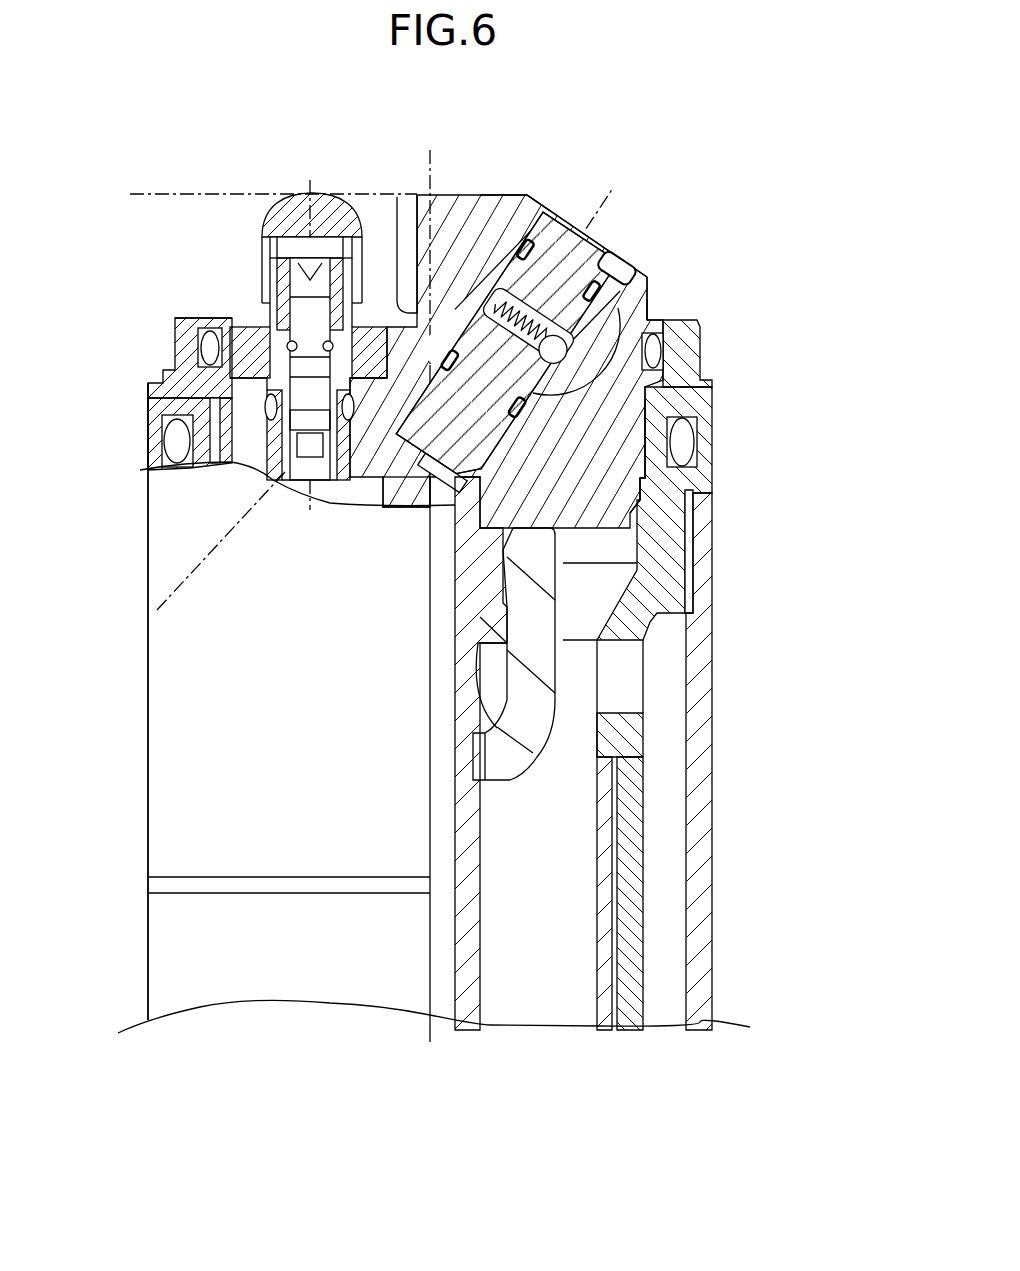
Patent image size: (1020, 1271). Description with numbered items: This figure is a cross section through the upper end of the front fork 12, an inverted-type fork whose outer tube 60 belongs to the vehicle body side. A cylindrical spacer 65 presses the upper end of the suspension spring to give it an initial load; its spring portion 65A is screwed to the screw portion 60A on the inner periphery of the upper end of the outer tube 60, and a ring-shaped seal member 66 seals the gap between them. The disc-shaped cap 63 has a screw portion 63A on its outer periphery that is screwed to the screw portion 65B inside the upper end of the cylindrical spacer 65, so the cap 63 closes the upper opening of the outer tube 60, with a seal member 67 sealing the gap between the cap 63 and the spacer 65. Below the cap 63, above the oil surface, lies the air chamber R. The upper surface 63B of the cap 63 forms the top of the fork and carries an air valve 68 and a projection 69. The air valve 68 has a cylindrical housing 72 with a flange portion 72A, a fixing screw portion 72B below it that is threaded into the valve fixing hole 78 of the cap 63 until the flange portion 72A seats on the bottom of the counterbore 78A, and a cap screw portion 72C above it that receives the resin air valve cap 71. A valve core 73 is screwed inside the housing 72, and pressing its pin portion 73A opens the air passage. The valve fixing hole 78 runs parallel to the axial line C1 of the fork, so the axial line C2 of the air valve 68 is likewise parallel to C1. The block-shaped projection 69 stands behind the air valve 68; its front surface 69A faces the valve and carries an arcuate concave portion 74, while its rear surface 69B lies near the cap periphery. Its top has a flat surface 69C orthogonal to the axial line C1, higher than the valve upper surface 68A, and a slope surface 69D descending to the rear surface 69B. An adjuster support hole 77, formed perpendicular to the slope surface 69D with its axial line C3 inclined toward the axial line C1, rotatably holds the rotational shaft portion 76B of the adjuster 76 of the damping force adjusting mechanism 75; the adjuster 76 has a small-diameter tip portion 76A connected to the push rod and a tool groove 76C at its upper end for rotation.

The front fork 12 is at (662, 47).
The outer tube 60 is at (705, 792).
The screw portion 60A is at (693, 563).
The cap 63 is at (645, 403).
The screw portion 63A is at (657, 467).
The upper surface 63B is at (210, 317).
The cylindrical spacer 65 is at (643, 833).
The spring portion 65A is at (690, 573).
The screw portion 65B is at (650, 437).
The seal member 66 is at (683, 445).
The seal member 67 is at (683, 348).
The air valve 68 is at (262, 336).
The valve upper surface 68A is at (278, 283).
The projection 69 is at (477, 190).
The front surface 69A is at (385, 215).
The rear surface 69B is at (653, 300).
The flat surface 69C is at (504, 193).
The slope surface 69D is at (653, 297).
The air valve cap 71 is at (287, 197).
The housing 72 is at (203, 362).
The flange portion 72A is at (357, 200).
The fixing screw portion 72B is at (230, 468).
The cap screw portion 72C is at (270, 283).
The valve core 73 is at (335, 205).
The pin portion 73A is at (326, 193).
The concave portion 74 is at (412, 210).
The damping force adjusting mechanism 75 is at (551, 195).
The adjuster 76 is at (650, 258).
The small-diameter tip portion 76A is at (448, 478).
The rotational shaft portion 76B is at (621, 243).
The tool groove 76C is at (615, 246).
The adjuster support hole 77 is at (655, 323).
The valve fixing hole 78 is at (372, 485).
The counterbore 78A is at (148, 398).
The axial line C1 is at (430, 970).
The axial line C2 is at (155, 612).
The axial line C3 is at (580, 207).
The air chamber R is at (528, 937).